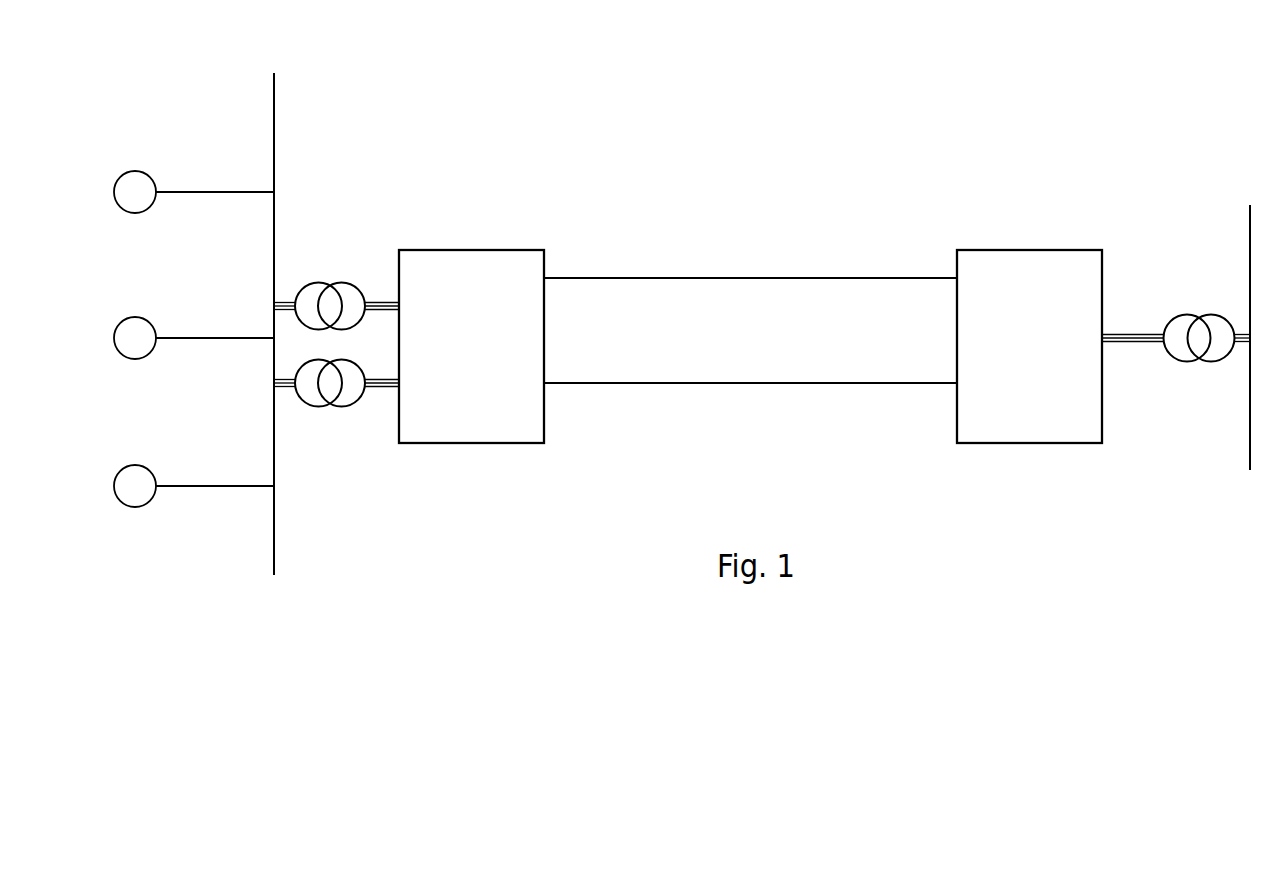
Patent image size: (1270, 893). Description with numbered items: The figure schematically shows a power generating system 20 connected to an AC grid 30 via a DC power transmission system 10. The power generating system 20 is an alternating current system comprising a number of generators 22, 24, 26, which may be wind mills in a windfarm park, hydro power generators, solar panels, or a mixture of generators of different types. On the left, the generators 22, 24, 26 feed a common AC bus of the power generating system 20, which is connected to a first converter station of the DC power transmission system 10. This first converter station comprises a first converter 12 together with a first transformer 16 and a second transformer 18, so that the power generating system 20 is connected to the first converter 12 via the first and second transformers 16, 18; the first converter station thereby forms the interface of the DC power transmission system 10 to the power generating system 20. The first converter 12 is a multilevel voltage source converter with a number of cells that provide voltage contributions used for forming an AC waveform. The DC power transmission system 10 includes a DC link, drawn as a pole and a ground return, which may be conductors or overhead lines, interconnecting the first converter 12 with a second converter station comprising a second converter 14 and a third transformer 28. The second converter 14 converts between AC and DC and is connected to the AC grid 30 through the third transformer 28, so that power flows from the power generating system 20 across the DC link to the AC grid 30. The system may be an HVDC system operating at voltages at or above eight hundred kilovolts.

The DC power transmission system 10 is at (1135, 237).
The first converter 12 is at (471, 346).
The second converter 14 is at (1029, 346).
The first transformer 16 is at (337, 287).
The second transformer 18 is at (337, 368).
The power generating system 20 is at (299, 324).
The generator 22 is at (194, 174).
The generator 24 is at (194, 318).
The generator 26 is at (194, 468).
The third transformer 28 is at (1176, 321).
The AC grid 30 is at (1252, 320).